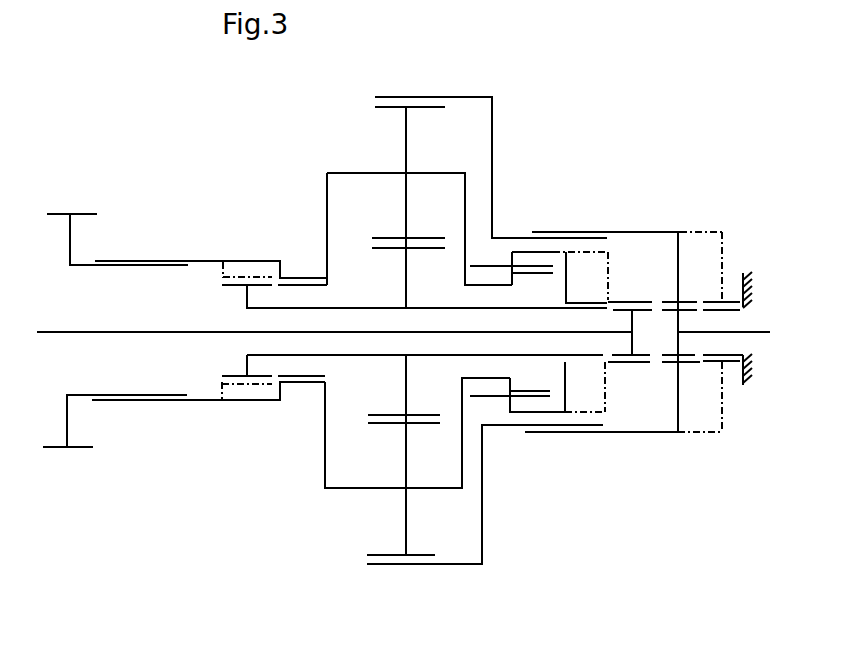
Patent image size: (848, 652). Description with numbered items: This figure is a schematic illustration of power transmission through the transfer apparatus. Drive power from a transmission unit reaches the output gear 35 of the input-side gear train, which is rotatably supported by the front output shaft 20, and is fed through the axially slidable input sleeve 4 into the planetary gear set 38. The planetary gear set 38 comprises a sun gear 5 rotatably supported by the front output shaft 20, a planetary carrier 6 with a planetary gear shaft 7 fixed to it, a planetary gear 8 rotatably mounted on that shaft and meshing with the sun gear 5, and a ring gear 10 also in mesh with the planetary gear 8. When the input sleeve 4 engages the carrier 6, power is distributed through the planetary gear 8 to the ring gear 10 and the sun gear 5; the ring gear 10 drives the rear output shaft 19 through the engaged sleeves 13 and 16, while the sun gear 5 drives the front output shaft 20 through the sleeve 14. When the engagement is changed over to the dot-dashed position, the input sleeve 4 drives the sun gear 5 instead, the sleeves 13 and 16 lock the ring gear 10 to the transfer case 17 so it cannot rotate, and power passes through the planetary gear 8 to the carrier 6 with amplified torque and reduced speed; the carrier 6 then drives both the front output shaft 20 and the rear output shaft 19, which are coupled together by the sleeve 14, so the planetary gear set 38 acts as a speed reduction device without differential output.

The input sleeve 4 is at (213, 261).
The sun gear 5 is at (406, 287).
The planetary carrier 6 is at (325, 163).
The planetary gear shaft 7 is at (440, 173).
The planetary gear 8 is at (406, 128).
The ring gear 10 is at (440, 97).
The sleeve 13 is at (622, 232).
The sleeve 14 is at (610, 300).
The sleeve 16 is at (680, 268).
The transfer case 17 is at (725, 300).
The rear output shaft 19 is at (770, 331).
The front output shaft 20 is at (165, 335).
The output gear 35 is at (70, 248).
The planetary gear set 38 is at (423, 574).